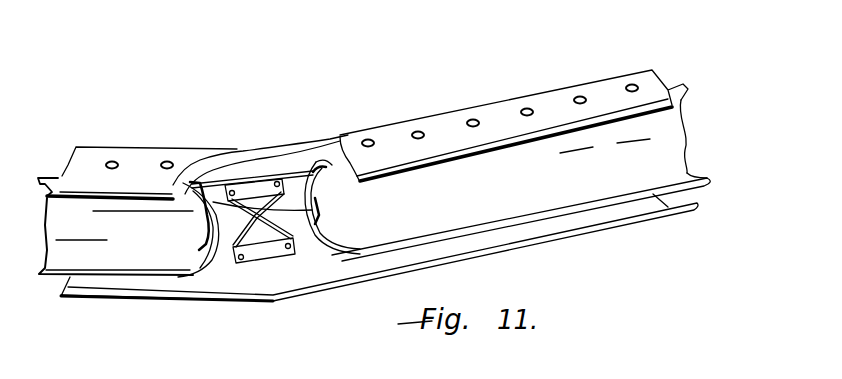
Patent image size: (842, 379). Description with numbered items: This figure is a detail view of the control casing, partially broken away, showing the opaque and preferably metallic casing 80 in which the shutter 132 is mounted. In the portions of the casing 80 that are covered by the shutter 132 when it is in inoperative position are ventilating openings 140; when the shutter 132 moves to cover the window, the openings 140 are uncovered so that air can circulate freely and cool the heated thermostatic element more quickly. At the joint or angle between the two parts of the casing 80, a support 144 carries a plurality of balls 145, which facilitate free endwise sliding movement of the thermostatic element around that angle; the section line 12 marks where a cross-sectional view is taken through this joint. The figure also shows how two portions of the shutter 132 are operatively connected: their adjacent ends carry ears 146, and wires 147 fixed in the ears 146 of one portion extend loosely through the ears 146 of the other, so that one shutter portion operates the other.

The casing 80 is at (138, 158).
The shutter 132 is at (129, 262).
The ventilating openings 140 is at (630, 86).
The support 144 is at (220, 243).
The balls 145 is at (286, 255).
The ears 146 is at (203, 215).
The wires 147 is at (284, 176).
The section line 12- 12 is at (266, 270).